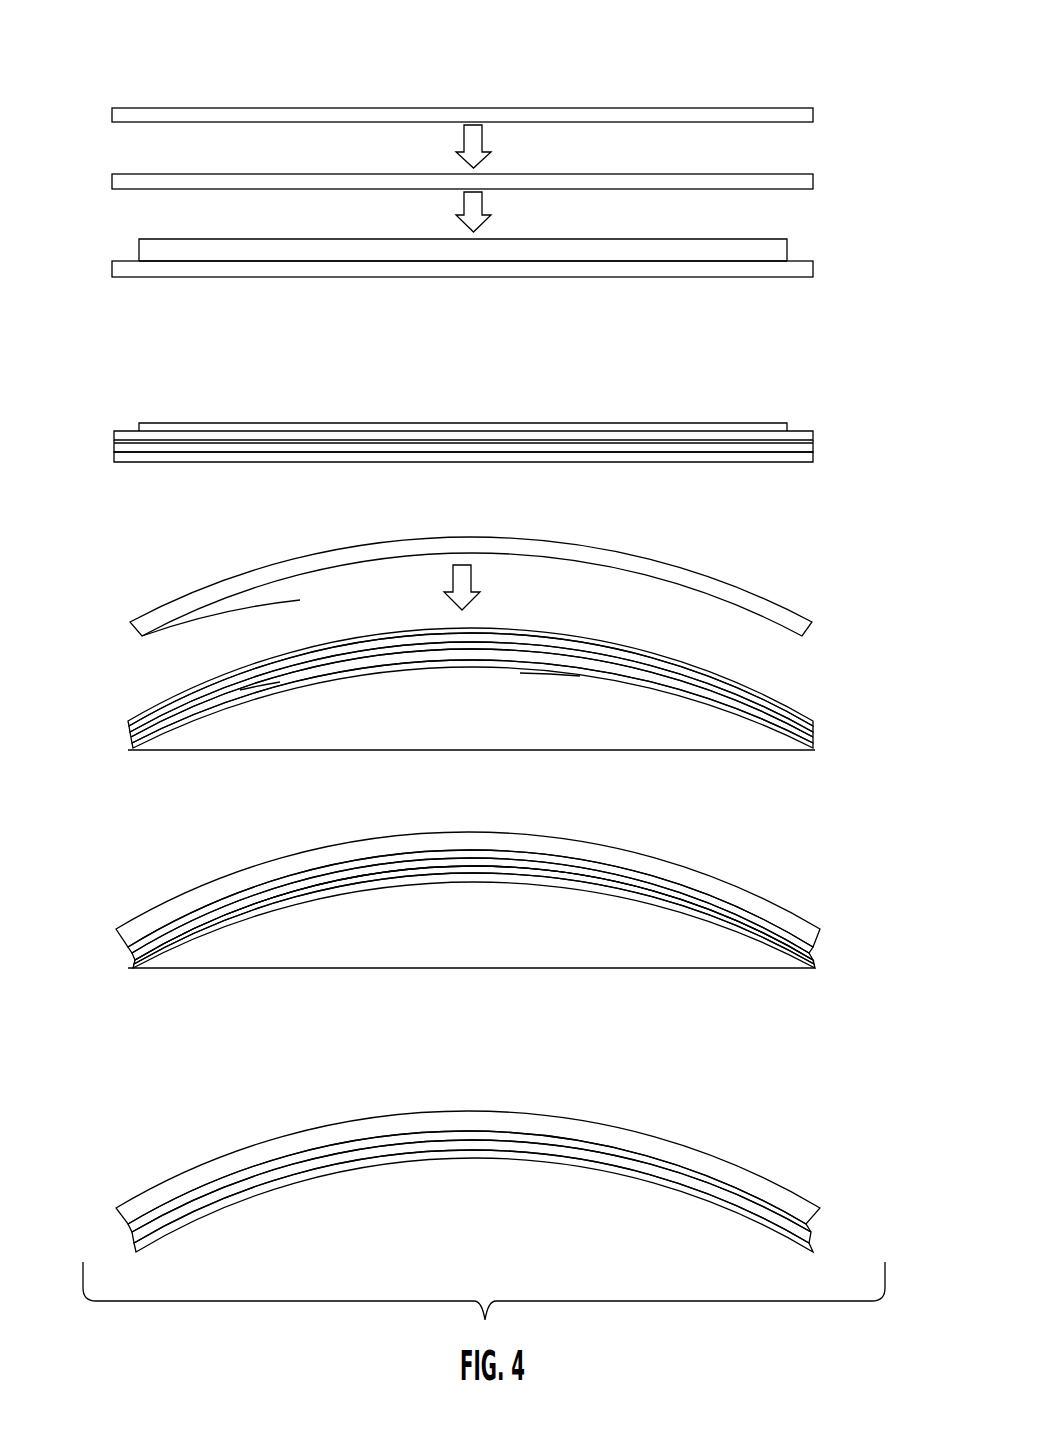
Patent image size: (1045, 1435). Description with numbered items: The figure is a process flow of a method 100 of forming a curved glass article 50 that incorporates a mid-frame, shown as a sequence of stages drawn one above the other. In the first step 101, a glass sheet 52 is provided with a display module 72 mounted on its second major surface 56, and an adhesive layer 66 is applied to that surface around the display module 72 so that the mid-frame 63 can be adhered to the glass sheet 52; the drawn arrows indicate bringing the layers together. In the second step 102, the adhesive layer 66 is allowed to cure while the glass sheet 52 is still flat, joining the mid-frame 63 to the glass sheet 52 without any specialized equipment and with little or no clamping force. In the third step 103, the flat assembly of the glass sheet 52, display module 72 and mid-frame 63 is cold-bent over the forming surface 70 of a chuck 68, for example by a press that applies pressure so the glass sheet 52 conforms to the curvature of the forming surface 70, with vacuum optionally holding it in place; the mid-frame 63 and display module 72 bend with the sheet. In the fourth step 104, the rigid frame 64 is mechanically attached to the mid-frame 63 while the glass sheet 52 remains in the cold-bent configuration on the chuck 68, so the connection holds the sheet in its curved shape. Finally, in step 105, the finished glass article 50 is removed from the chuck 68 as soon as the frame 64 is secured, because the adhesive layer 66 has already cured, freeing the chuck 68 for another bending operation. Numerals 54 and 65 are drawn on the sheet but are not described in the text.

The method 100 is at (132, 52).
The first step 101 is at (845, 192).
The second step 102 is at (840, 432).
The third step 103 is at (868, 648).
The fourth step 104 is at (842, 935).
The step 105 is at (827, 1195).
The glass article 50 is at (152, 1175).
The glass sheet 52 is at (112, 270).
The first surface 54 is at (242, 706).
The second major surface 56 is at (550, 262).
The mid-frame 63 is at (300, 107).
The frame 64 is at (175, 594).
The mold surface 65 is at (193, 607).
The adhesive layer 66 is at (627, 183).
The chuck 68 is at (270, 738).
The forming surface 70 is at (390, 672).
The display module 72 is at (262, 245).